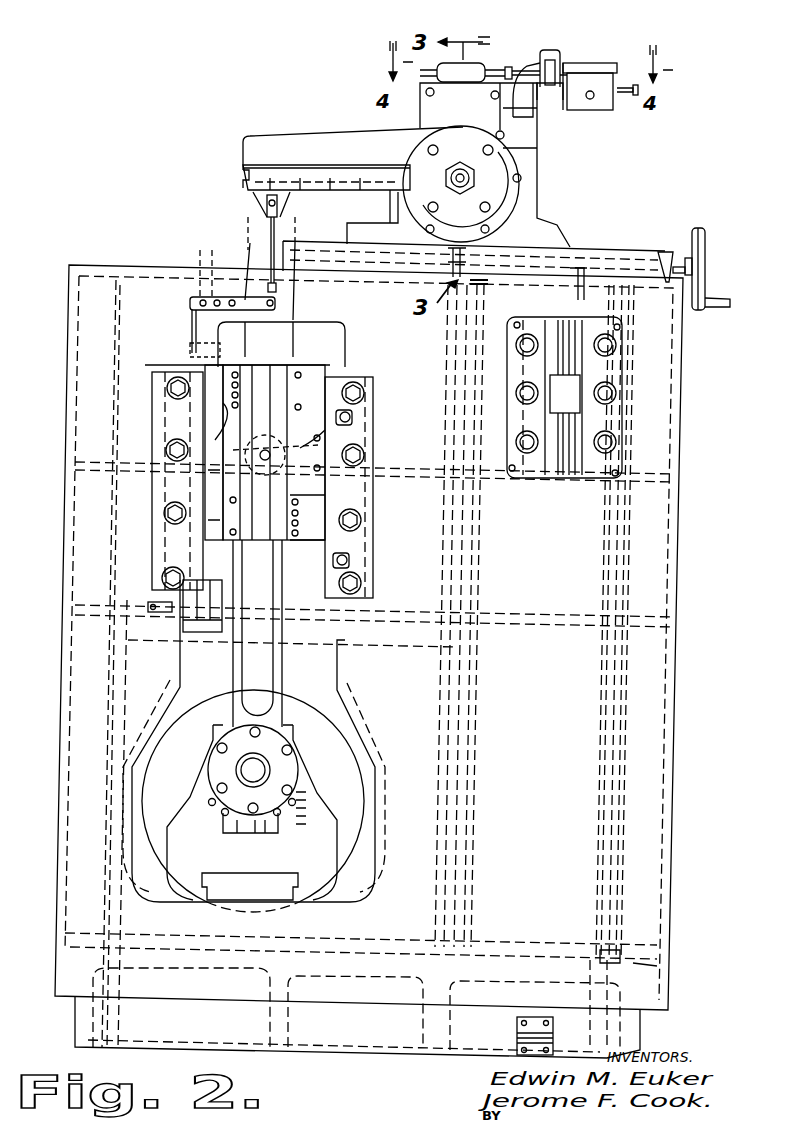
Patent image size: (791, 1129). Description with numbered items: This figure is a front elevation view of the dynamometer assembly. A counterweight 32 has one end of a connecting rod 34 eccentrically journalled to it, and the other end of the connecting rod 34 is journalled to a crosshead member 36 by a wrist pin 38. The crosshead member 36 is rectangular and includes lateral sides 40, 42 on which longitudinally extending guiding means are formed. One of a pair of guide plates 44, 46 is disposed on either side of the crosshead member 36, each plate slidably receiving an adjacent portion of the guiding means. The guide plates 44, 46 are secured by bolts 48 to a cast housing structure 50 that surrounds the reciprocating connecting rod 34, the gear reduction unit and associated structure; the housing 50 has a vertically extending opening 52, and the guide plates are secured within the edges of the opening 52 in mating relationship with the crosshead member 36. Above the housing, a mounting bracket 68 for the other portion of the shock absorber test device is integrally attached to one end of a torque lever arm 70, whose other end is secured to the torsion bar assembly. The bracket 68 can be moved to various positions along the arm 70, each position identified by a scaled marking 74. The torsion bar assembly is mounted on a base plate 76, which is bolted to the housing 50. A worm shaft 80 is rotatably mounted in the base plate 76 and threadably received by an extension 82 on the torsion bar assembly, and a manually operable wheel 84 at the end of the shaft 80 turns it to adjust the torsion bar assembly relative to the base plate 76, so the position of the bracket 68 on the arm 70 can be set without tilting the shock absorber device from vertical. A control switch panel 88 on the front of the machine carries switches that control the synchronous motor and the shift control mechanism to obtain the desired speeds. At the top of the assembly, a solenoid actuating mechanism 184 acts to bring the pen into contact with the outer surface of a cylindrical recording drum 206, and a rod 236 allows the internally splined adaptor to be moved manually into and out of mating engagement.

The counterweight 32 is at (337, 818).
The connecting rod 34 is at (283, 663).
The crosshead member 36 is at (314, 546).
The wrist pin 38 is at (330, 441).
The lateral side 40 is at (250, 431).
The lateral side 42 is at (205, 498).
The guide plate 44 is at (167, 535).
The guide plate 46 is at (348, 543).
The bolts 48 is at (167, 388).
The cast housing structure 50 is at (68, 470).
The vertically extending opening 52 is at (180, 686).
The mounting bracket 68 is at (250, 204).
The torque lever arm 70 is at (355, 160).
The scaled marking 74 is at (350, 193).
The base plate 76 is at (610, 254).
The worm shaft 80 is at (676, 254).
The extension 82 is at (470, 262).
The manually operable wheel 84 is at (704, 278).
The control switch panel 88 is at (625, 432).
The solenoid actuating mechanism 184 is at (546, 50).
The cylindrical recording drum 206 is at (596, 63).
The rod 236 is at (633, 84).